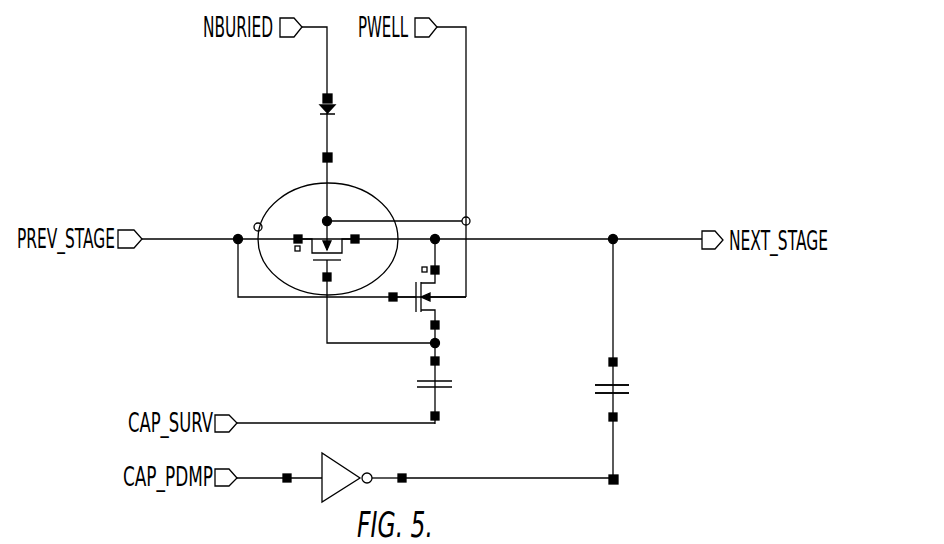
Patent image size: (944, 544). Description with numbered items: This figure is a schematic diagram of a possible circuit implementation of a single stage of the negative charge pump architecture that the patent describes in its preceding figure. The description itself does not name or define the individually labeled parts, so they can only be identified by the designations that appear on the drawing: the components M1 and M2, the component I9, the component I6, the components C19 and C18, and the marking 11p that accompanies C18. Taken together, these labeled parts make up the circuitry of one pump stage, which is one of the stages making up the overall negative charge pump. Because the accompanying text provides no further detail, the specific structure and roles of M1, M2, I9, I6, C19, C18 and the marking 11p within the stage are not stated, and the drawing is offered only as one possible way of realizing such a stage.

The PMOS transistor M1 is at (319, 251).
The PMOS transistor M2 is at (427, 291).
The subcircuit block I9 is at (362, 253).
The inverter I6 is at (360, 477).
The capacitor C19 is at (444, 390).
The capacitor C18 is at (622, 391).
The capacitance value of C18 11p is at (599, 404).